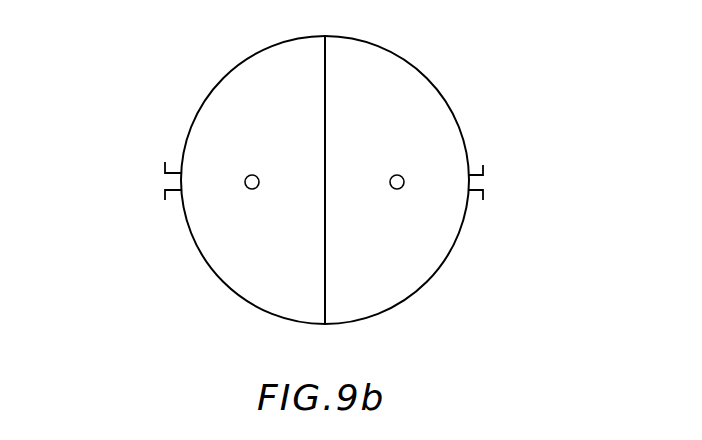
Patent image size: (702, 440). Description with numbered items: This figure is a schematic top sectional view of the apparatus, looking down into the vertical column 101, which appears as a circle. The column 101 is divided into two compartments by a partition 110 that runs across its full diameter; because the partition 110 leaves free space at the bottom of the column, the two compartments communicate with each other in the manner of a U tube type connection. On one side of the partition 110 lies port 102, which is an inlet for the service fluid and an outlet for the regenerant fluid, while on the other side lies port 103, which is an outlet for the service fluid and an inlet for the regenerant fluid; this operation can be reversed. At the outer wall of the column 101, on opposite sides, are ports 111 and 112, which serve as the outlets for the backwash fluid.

The vertical column 101 is at (433, 110).
The partition 110 is at (324, 265).
The port 102 is at (250, 189).
The port 103 is at (399, 189).
The port 111 is at (165, 192).
The port 112 is at (483, 175).